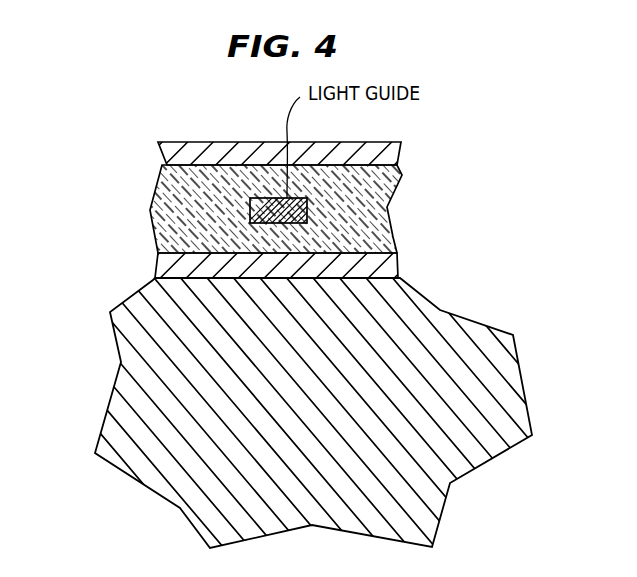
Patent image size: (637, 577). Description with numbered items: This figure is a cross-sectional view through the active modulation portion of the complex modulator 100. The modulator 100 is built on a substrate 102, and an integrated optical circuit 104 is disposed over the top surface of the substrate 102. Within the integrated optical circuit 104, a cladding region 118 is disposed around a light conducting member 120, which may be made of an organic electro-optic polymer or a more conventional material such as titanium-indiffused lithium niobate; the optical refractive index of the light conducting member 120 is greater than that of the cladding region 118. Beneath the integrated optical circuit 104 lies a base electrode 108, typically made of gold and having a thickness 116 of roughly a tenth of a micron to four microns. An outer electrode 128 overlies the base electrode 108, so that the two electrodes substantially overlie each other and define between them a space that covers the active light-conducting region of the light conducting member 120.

The complex modulator 100 is at (132, 108).
The substrate 102 is at (120, 408).
The integrated optical circuit 104 is at (127, 165).
The base electrode 108 is at (160, 289).
The thickness 116 is at (405, 254).
The cladding region 118 is at (391, 191).
The light conducting member 120 is at (307, 213).
The outer electrode 128 is at (186, 141).